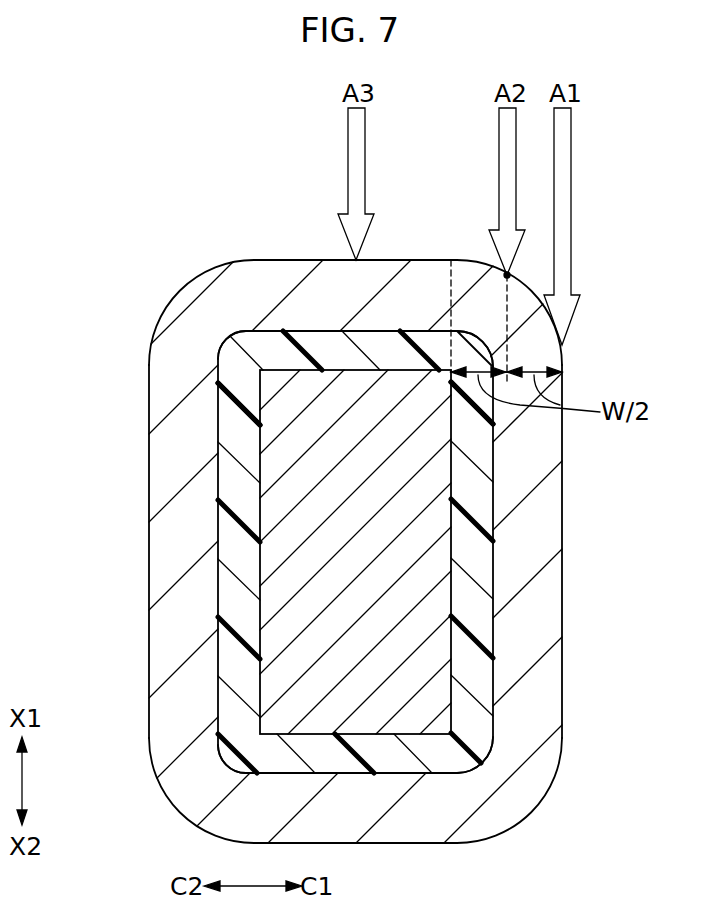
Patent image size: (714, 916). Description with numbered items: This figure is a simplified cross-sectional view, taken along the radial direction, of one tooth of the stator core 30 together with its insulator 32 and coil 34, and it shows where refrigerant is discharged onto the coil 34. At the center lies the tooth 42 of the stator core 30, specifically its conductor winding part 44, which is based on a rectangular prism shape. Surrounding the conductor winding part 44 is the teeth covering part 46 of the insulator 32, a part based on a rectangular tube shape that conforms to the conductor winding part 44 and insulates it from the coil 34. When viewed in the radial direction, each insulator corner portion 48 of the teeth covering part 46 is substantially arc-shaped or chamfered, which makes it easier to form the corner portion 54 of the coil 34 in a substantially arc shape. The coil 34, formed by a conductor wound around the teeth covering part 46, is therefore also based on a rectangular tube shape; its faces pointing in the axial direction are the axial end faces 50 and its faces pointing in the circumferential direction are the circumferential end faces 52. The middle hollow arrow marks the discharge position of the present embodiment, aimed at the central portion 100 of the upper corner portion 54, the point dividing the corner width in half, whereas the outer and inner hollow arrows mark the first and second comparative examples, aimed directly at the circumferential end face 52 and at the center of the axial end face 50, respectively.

The central portion 100 is at (507, 275).
The corner portion 54 is at (200, 273).
The axial end face 50 is at (302, 259).
The circumferential end face 52 is at (149, 504).
The coil 34 is at (560, 500).
The insulator 32 is at (493, 568).
The teeth covering part 46 is at (480, 617).
The stator core 30 is at (452, 662).
The teeth 42 is at (601, 670).
The conductor winding part 44 is at (435, 702).
The insulator corner portion 48 is at (227, 350).